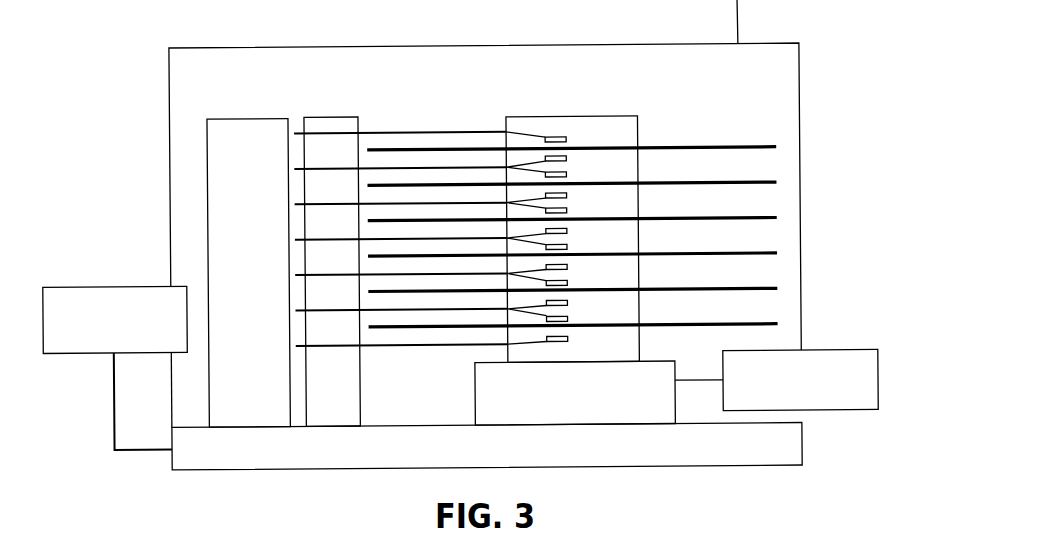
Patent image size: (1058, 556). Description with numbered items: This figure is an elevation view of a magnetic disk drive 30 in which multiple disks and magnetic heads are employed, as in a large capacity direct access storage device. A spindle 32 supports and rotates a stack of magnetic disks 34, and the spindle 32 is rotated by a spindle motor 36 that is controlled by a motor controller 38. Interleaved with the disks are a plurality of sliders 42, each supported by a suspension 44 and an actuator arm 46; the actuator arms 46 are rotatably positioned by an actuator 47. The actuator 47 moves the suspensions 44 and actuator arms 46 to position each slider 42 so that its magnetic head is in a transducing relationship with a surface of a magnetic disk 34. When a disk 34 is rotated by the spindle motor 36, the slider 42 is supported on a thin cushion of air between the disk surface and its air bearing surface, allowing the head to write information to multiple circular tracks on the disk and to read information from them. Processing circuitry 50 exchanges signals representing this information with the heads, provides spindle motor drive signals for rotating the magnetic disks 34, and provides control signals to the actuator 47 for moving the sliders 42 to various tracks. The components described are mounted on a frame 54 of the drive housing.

The magnetic disk drive 30 is at (690, 118).
The spindle 32 is at (625, 116).
The magnetic disk 34 is at (777, 150).
The spindle motor 36 is at (588, 406).
The motor controller 38 is at (837, 413).
The slider 42 is at (567, 159).
The suspension 44 is at (537, 171).
The actuator arm 46 is at (505, 167).
The actuator 47 is at (229, 123).
The processing circuitry 50 is at (88, 284).
The frame 54 is at (227, 468).